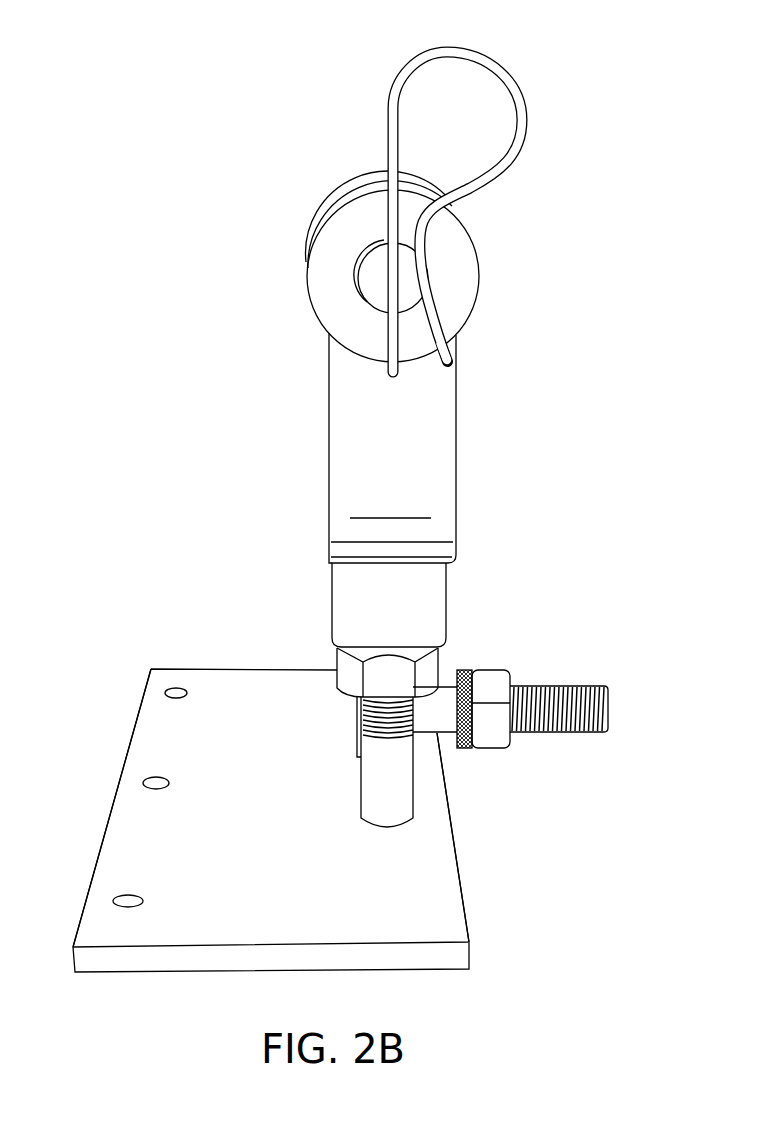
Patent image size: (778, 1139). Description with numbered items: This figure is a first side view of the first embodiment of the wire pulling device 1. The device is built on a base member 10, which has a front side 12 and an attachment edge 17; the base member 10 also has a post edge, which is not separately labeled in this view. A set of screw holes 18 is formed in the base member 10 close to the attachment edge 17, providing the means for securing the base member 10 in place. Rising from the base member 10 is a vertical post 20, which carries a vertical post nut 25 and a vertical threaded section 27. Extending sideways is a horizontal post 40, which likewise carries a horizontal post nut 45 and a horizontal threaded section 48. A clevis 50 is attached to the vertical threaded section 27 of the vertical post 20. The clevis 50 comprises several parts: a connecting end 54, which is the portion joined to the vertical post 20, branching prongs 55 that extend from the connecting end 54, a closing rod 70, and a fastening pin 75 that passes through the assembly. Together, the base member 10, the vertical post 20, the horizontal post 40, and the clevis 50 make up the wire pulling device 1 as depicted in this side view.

The wire pulling device 1 is at (126, 457).
The base member 10 is at (165, 640).
The front side 12 is at (428, 915).
The attachment edge 17 is at (106, 830).
The screw holes 18 is at (176, 693).
The vertical post 20 is at (416, 800).
The vertical post nut 25 is at (345, 679).
The vertical threaded section 27 is at (363, 720).
The horizontal post 40 is at (530, 652).
The horizontal post nut 45 is at (488, 681).
The horizontal threaded section 48 is at (586, 686).
The clevis 50 is at (289, 492).
The connecting end 54 is at (395, 595).
The branching prongs 55 is at (407, 413).
The closing rod 70 is at (393, 282).
The fastening pin 75 is at (471, 60).